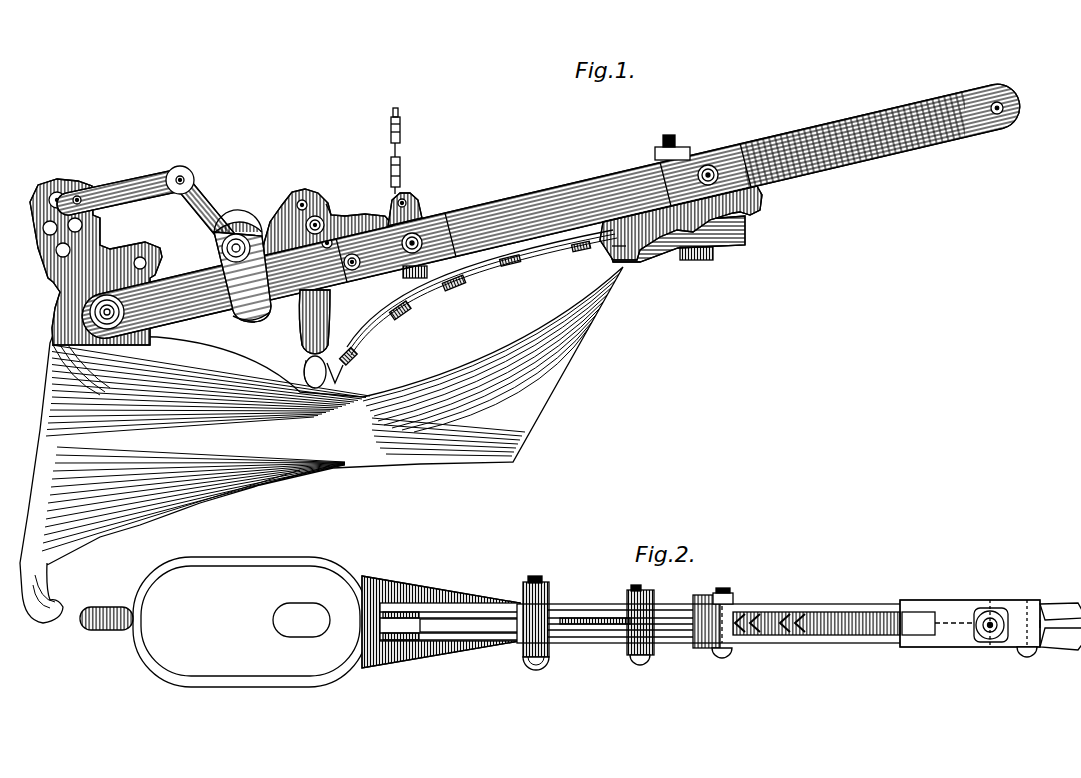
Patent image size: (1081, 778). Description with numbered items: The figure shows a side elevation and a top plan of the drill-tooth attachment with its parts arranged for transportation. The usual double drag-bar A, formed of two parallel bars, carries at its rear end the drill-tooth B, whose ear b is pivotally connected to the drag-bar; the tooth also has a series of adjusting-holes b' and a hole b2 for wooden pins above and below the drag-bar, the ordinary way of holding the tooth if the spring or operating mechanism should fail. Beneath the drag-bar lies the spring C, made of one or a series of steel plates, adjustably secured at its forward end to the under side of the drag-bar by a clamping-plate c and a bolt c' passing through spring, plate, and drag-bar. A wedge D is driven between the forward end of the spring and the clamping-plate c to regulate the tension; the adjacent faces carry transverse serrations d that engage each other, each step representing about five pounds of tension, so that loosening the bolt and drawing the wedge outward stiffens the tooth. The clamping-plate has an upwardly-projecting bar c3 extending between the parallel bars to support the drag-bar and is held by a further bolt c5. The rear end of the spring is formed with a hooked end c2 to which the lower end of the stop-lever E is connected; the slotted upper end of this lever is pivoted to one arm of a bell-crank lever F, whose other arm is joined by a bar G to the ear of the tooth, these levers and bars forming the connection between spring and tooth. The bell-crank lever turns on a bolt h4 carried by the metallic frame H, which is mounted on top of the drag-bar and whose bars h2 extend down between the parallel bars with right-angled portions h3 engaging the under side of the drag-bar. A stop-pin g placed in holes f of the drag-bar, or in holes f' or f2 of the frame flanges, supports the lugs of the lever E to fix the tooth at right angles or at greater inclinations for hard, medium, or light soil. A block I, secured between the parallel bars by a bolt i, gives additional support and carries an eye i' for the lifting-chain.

In FIG. 1, the double drag-bar A is at (550, 211).
In FIG. 2, the double drag-bar A is at (798, 610).
In FIG. 1, the drill-tooth B is at (321, 445).
In FIG. 2, the drill-tooth B is at (443, 652).
In FIG. 1, the ear b is at (96, 262).
In FIG. 2, the ear b is at (450, 622).
In FIG. 1, the adjusting-holes b' is at (35, 238).
In FIG. 1, the hole b2 is at (140, 257).
In FIG. 1, the spring C is at (478, 297).
In FIG. 1, the clamping-plate c is at (619, 241).
In FIG. 2, the clamping-plate c is at (990, 630).
In FIG. 1, the hooked end c2 is at (340, 376).
In FIG. 2, the upwardly-projecting bar c3 is at (938, 623).
In FIG. 2, the bolt c' is at (991, 616).
In FIG. 2, the bolt c5 is at (1027, 635).
In FIG. 1, the wedge D is at (758, 203).
In FIG. 1, the serrations d is at (747, 219).
In FIG. 1, the stop-lever E is at (310, 339).
In FIG. 1, the bell-crank lever F is at (218, 210).
In FIG. 1, the bar G is at (124, 192).
In FIG. 1, the metallic frame H is at (296, 194).
In FIG. 2, the metallic frame H is at (630, 600).
In FIG. 1, the holes f is at (360, 234).
In FIG. 1, the holes f' is at (334, 191).
In FIG. 1, the holes f2 is at (304, 198).
In FIG. 1, the stop-pin g is at (322, 220).
In FIG. 2, the stop-pin g is at (638, 661).
In FIG. 1, the bars of frame h2 is at (242, 266).
In FIG. 2, the bars of frame h2 is at (550, 593).
In FIG. 1, the right-angled portions h3 is at (251, 321).
In FIG. 1, the bolt h4 is at (222, 249).
In FIG. 2, the bolt h4 is at (546, 661).
In FIG. 1, the block I is at (408, 167).
In FIG. 2, the block I is at (700, 650).
In FIG. 1, the bolt i is at (408, 188).
In FIG. 2, the bolt i is at (722, 629).
In FIG. 2, the eye i' is at (740, 615).